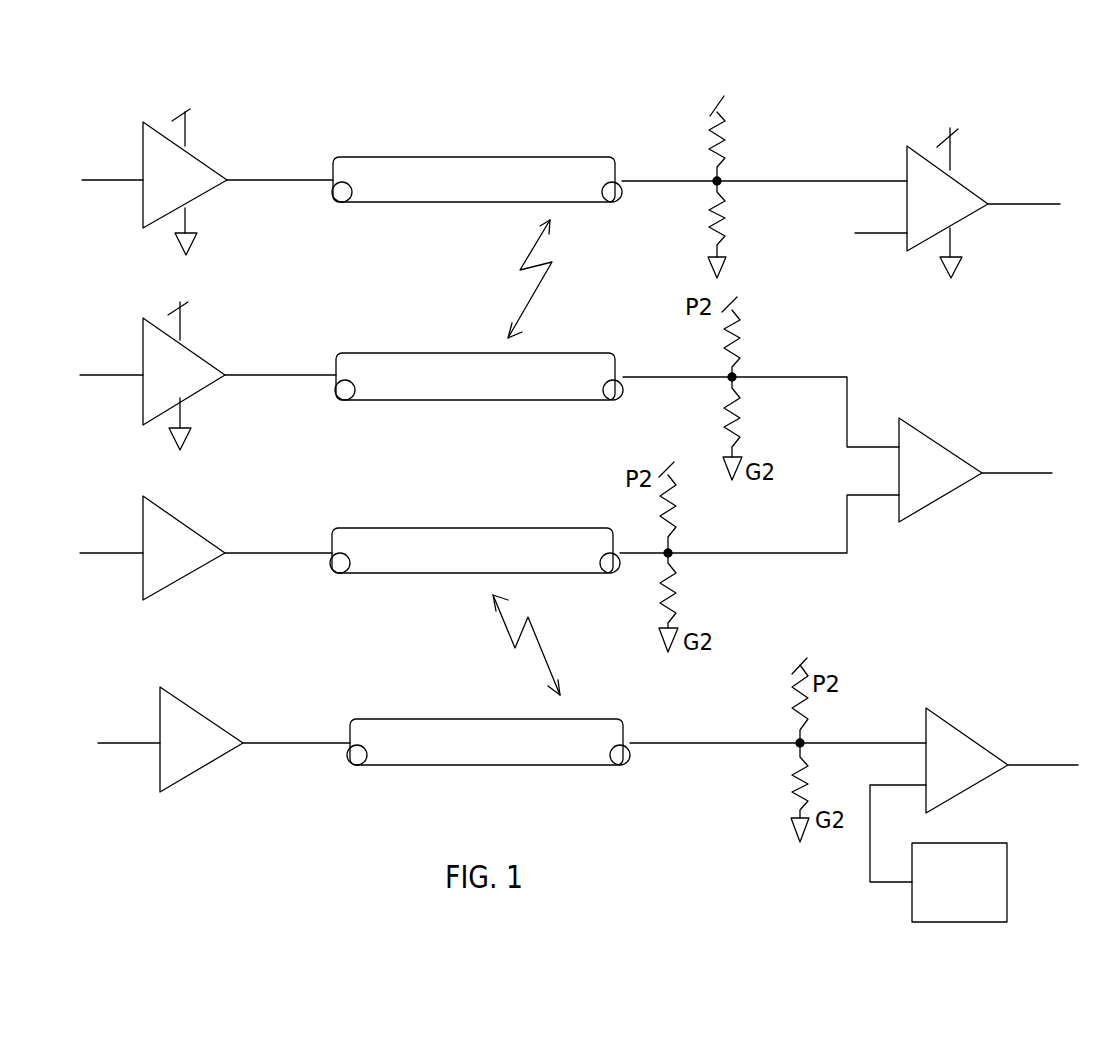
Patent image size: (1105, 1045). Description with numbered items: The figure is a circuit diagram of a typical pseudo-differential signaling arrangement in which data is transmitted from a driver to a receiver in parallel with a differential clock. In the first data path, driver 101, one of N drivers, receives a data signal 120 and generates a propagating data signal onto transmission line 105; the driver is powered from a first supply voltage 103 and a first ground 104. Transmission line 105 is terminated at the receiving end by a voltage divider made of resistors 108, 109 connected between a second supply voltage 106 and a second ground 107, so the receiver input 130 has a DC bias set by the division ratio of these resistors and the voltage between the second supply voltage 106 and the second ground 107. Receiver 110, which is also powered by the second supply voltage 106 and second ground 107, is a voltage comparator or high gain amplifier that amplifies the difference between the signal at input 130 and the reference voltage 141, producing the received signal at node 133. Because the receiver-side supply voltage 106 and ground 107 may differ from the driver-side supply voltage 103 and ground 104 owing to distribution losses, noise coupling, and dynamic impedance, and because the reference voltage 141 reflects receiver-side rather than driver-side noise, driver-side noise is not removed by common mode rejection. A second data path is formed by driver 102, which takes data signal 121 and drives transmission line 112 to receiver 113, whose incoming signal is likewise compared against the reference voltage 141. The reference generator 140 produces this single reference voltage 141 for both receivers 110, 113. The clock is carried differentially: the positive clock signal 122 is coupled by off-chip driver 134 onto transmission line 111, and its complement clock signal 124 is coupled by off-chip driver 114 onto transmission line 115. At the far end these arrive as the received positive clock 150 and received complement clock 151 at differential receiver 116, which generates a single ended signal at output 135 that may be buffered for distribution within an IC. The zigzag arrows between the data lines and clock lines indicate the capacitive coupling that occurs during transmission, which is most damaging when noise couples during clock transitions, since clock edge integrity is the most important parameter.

The data signal 120 is at (87, 145).
The driver 101 is at (205, 161).
The P1 103 is at (200, 100).
The G1 104 is at (240, 242).
The transmission line 105 is at (425, 156).
The P2 106 is at (728, 98).
The G2 107 is at (672, 257).
The resistor 108 is at (730, 146).
The resistor 109 is at (730, 219).
The receiver 110 is at (906, 171).
The receiver input 130 is at (833, 182).
The node 133 is at (1035, 202).
The reference voltage Vref 141 is at (873, 236).
The clock signal Clk_P 122 is at (123, 348).
The off-chip driver 134 is at (200, 355).
The transmission line 111 is at (428, 352).
The clock signal Clk_N 124 is at (114, 520).
The off-chip driver 114 is at (205, 533).
The transmission line 115 is at (445, 528).
The Clk_P 150 is at (849, 445).
The Clk_N 151 is at (826, 548).
The differential receiver 116 is at (935, 438).
The output 135 is at (1010, 475).
The data signal 121 is at (112, 716).
The driver 102 is at (218, 762).
The transmission line 112 is at (440, 718).
The receiver 113 is at (978, 786).
The reference generator 140 is at (1008, 882).